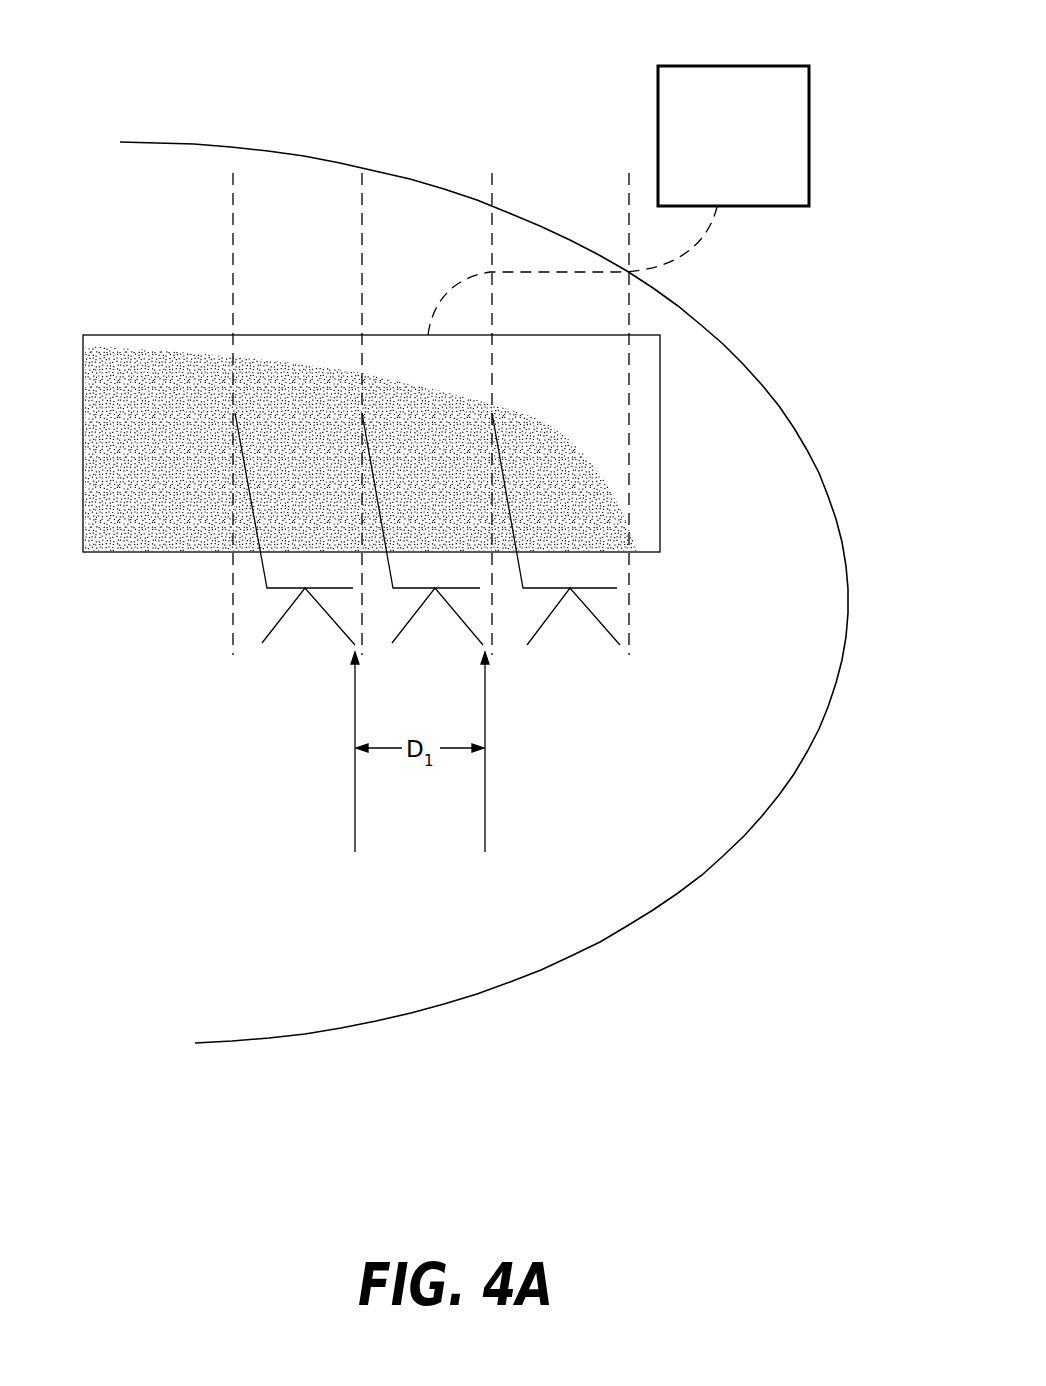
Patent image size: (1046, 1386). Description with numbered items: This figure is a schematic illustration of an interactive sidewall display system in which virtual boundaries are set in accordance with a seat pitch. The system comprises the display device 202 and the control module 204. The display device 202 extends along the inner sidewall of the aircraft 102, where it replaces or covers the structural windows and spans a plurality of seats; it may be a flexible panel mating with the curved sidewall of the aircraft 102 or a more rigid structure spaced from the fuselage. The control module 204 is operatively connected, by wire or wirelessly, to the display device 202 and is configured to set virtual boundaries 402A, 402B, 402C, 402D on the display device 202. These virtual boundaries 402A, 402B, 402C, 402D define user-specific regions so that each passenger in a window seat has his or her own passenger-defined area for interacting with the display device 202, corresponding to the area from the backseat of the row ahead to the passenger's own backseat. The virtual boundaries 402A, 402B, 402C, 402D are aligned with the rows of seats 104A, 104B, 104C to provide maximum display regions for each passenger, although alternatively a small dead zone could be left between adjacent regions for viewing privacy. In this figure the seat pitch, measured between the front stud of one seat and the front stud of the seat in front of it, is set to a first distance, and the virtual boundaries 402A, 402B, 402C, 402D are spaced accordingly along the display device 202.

The aircraft 102 is at (783, 413).
The display device 202 is at (160, 335).
The control module 204 is at (715, 66).
The seat 104A is at (262, 562).
The seat 104B is at (390, 562).
The seat 104C is at (520, 562).
The virtual boundary 402A is at (233, 275).
The virtual boundary 402B is at (362, 272).
The virtual boundary 402C is at (492, 183).
The virtual boundary 402D is at (629, 650).